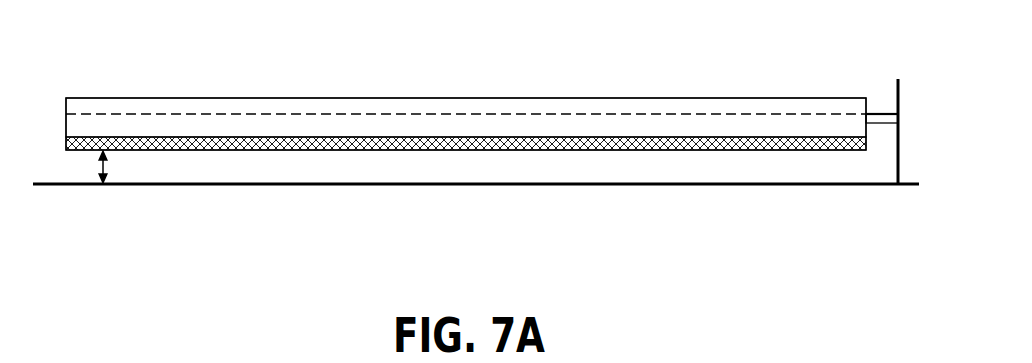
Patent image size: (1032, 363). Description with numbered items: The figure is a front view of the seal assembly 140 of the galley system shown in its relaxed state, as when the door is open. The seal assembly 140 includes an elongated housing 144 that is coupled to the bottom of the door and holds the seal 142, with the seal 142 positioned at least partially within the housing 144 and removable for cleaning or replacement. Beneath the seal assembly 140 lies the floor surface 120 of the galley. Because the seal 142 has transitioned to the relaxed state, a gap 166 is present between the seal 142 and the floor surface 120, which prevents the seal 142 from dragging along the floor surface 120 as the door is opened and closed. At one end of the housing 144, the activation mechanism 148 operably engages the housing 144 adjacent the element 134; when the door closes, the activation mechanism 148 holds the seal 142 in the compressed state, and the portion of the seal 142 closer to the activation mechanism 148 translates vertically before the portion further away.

The seal assembly 140 is at (56, 49).
The housing 144 is at (633, 98).
The seal 142 is at (640, 151).
The floor surface 120 is at (440, 186).
The support post 134 is at (900, 97).
The activation mechanism 148 is at (884, 126).
The gap 166 is at (101, 165).